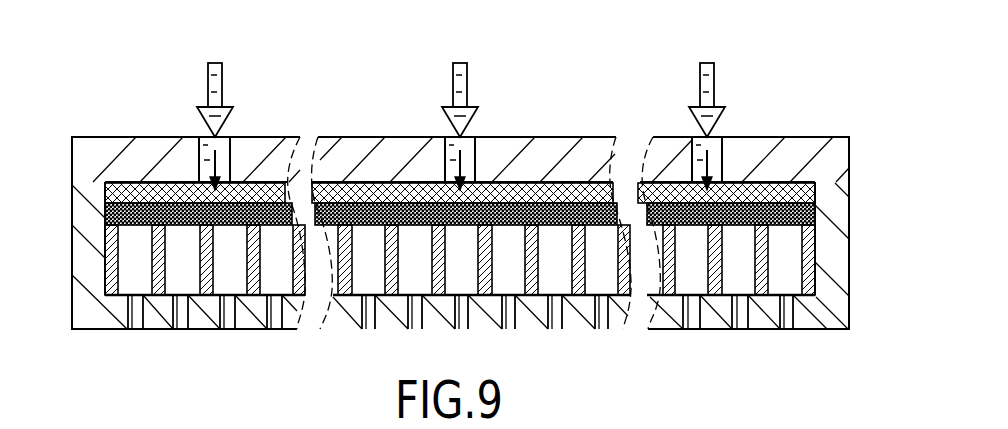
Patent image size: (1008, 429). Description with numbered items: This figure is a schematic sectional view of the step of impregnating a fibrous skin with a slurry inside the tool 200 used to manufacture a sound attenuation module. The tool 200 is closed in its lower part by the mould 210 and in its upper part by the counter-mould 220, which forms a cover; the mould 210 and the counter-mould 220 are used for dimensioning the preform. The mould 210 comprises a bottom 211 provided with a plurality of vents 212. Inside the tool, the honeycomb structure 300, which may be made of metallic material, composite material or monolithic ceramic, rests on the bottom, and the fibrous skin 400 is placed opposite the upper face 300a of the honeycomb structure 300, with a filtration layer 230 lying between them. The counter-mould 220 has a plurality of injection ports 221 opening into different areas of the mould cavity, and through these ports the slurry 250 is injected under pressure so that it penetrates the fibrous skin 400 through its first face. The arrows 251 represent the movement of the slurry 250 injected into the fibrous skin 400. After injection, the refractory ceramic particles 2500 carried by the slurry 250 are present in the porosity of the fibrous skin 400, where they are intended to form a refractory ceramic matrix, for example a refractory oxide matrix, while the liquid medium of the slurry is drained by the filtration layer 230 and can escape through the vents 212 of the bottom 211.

The tool 200 is at (116, 68).
The mould 210 is at (103, 320).
The bottom 211 is at (142, 295).
The vents 212 is at (231, 325).
The counter-mould 220 is at (820, 137).
The injection ports 221 is at (198, 153).
The filtration layer 230 is at (105, 213).
The slurry 250 is at (222, 90).
The arrows 251 is at (233, 157).
The honeycomb structure 300 is at (812, 258).
The upper face of the honeycomb structure 300a is at (815, 213).
The fibrous skin 400 is at (103, 195).
The refractory ceramic particles 2500 is at (217, 62).